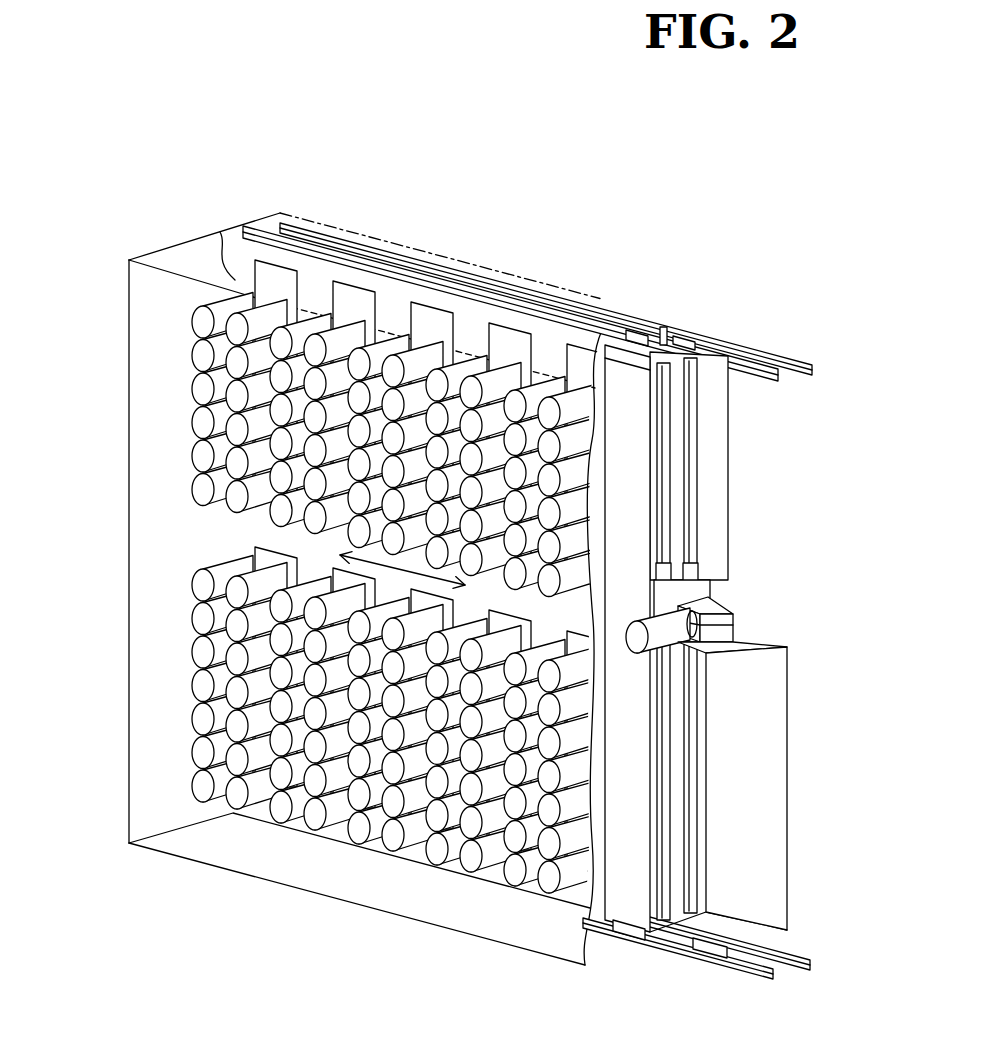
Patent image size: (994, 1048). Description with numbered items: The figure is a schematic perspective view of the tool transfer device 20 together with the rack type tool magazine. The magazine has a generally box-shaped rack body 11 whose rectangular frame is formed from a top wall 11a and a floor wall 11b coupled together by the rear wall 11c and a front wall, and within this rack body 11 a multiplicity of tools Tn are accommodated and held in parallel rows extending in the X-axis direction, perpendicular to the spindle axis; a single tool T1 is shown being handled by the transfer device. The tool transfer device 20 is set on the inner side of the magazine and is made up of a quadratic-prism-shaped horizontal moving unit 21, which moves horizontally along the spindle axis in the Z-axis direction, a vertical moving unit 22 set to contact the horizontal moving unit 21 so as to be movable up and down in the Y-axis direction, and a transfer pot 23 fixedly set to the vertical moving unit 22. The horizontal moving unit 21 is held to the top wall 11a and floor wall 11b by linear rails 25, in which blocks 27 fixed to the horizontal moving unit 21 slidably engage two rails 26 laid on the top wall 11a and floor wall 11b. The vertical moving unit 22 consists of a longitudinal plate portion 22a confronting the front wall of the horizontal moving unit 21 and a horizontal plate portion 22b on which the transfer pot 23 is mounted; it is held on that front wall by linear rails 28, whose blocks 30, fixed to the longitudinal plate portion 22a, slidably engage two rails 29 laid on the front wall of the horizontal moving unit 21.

The rack body 11 is at (330, 588).
The top wall 11a is at (198, 258).
The floor wall 11b is at (425, 916).
The rear wall 11c is at (140, 782).
The tools Tn is at (188, 498).
The test tube being transferred T1 is at (634, 654).
The tool transfer device 20 is at (716, 629).
The horizontal moving unit 21 is at (693, 629).
The vertical moving unit 22 is at (721, 719).
The longitudinal plate portion 22a is at (650, 602).
The horizontal plate portion 22b is at (768, 643).
The transfer pot 23 is at (737, 607).
The linear rails 25 is at (527, 620).
The rails 26 is at (667, 343).
The blocks 27 is at (628, 343).
The linear rails 28 is at (635, 639).
The rails 29 is at (690, 463).
The blocks 30 is at (692, 570).